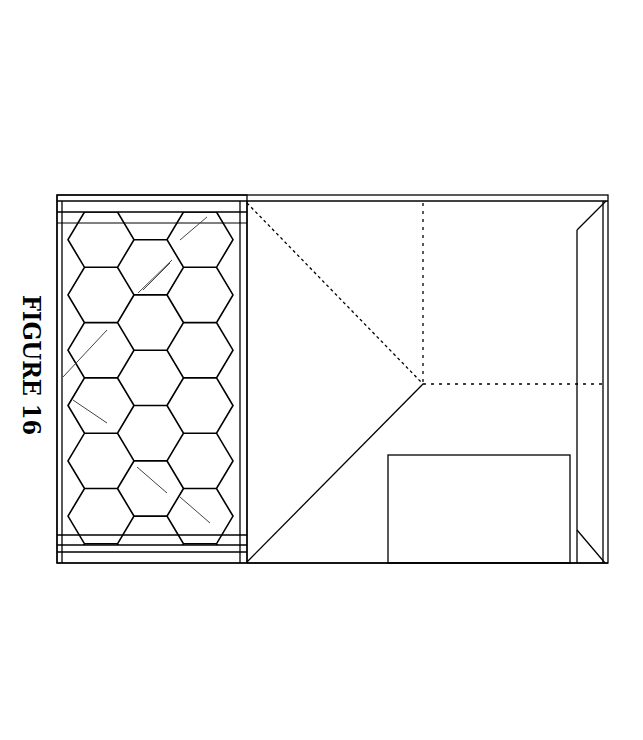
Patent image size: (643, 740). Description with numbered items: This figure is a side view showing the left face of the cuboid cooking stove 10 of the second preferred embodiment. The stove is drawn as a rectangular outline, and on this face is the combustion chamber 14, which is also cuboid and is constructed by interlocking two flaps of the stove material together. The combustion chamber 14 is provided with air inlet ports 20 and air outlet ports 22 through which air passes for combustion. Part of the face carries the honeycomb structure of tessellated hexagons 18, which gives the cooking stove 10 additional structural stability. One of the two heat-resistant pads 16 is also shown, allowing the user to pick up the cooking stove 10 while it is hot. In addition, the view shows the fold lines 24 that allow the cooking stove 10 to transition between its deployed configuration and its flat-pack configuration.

The cooking stove 10 is at (550, 118).
The combustion chamber 14 is at (158, 563).
The heat-resistant pads 16 is at (183, 196).
The honeycomb structure of tessellated hexagons 18 is at (470, 550).
The air inlet ports 20 is at (345, 550).
The air outlet ports 22 is at (188, 437).
The fold lines 24 is at (288, 527).